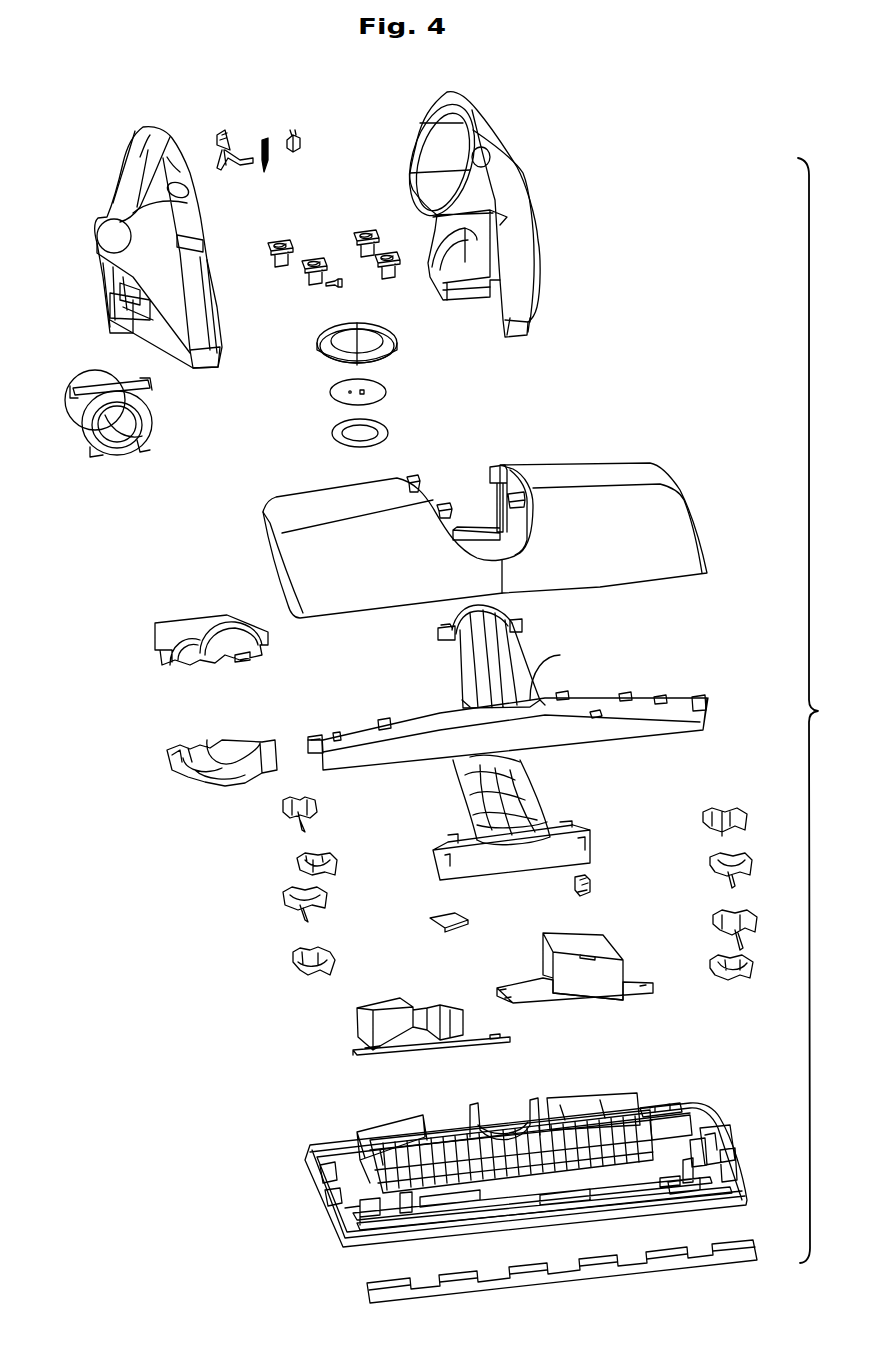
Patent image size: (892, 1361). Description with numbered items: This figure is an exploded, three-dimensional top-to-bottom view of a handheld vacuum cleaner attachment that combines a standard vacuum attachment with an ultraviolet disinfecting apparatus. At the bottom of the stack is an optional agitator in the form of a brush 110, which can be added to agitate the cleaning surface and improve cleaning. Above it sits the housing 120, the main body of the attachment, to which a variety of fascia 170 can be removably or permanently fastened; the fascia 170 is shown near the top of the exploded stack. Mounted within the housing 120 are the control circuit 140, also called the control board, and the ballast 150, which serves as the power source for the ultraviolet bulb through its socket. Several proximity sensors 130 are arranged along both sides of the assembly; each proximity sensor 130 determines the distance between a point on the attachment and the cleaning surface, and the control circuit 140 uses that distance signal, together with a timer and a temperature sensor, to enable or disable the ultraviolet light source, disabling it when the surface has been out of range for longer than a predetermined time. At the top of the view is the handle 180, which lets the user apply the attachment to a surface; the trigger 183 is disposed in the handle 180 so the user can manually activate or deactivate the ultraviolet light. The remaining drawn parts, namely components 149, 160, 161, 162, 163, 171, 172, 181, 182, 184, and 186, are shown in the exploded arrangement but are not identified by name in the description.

The brush 110 is at (360, 1282).
The housing 120 is at (298, 1143).
The proximity sensor 130 is at (288, 860).
The control circuit 140 is at (453, 1047).
The fastening element 149 is at (643, 1107).
The ballast 150 is at (590, 997).
The intermediate plate 160 is at (648, 657).
The upper cable guide 161 is at (534, 663).
The lower cable guide 162 is at (551, 810).
The cable channel 163 is at (517, 800).
The fascia 170 is at (668, 464).
The bracket 171 is at (493, 465).
The screw 172 is at (457, 517).
The handle 180 is at (524, 138).
The handle housing half 181 is at (543, 260).
The handle housing half 182 is at (142, 125).
The trigger 183 is at (247, 157).
The spring 184 is at (264, 138).
The screw 186 is at (337, 287).